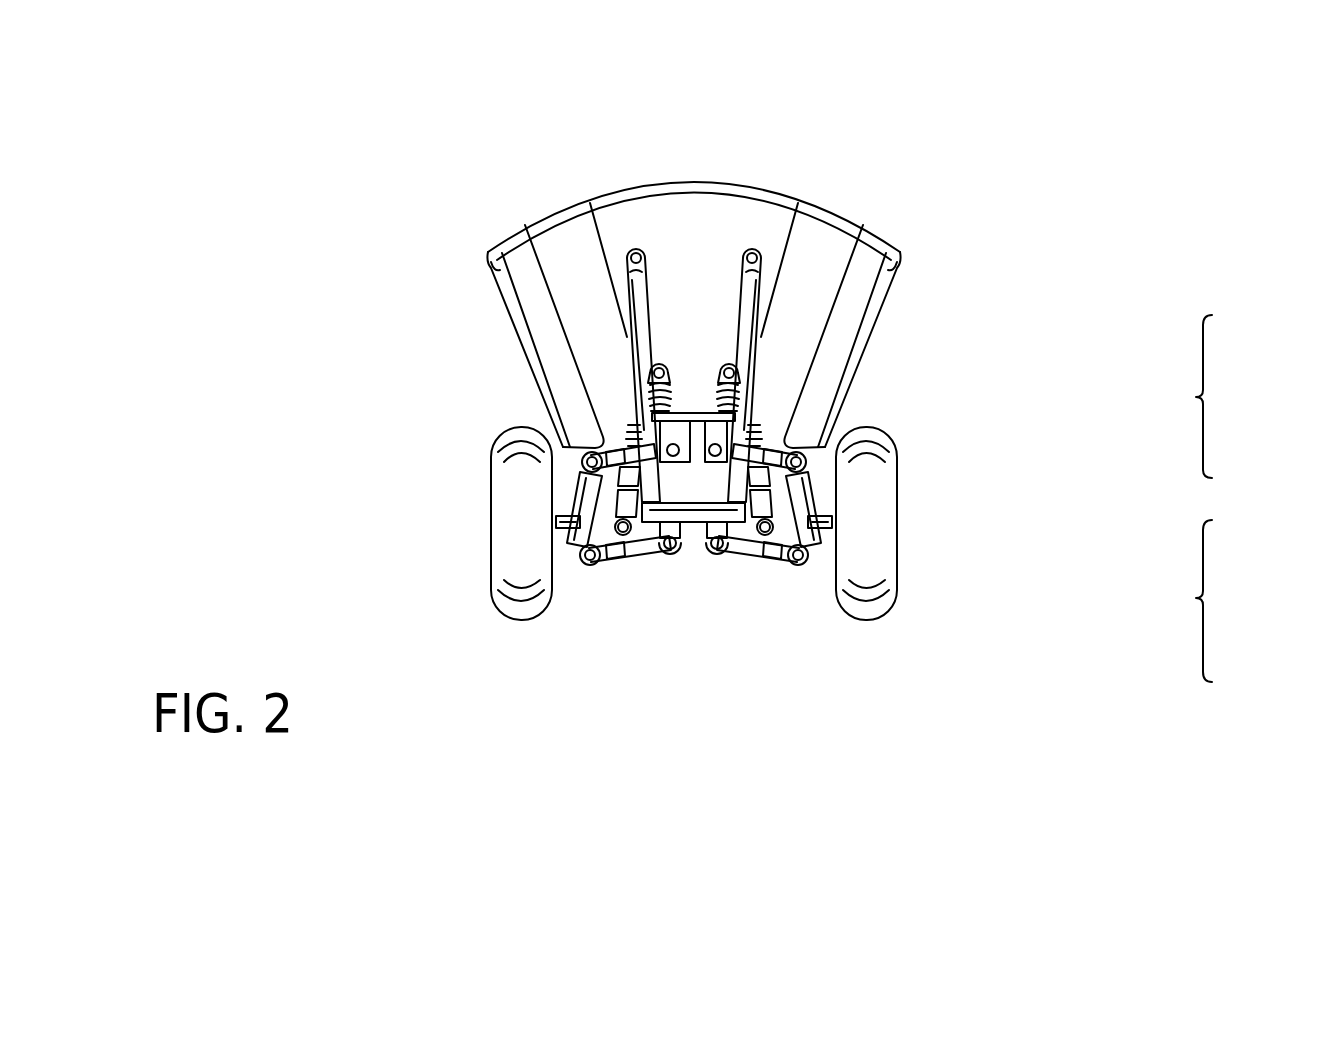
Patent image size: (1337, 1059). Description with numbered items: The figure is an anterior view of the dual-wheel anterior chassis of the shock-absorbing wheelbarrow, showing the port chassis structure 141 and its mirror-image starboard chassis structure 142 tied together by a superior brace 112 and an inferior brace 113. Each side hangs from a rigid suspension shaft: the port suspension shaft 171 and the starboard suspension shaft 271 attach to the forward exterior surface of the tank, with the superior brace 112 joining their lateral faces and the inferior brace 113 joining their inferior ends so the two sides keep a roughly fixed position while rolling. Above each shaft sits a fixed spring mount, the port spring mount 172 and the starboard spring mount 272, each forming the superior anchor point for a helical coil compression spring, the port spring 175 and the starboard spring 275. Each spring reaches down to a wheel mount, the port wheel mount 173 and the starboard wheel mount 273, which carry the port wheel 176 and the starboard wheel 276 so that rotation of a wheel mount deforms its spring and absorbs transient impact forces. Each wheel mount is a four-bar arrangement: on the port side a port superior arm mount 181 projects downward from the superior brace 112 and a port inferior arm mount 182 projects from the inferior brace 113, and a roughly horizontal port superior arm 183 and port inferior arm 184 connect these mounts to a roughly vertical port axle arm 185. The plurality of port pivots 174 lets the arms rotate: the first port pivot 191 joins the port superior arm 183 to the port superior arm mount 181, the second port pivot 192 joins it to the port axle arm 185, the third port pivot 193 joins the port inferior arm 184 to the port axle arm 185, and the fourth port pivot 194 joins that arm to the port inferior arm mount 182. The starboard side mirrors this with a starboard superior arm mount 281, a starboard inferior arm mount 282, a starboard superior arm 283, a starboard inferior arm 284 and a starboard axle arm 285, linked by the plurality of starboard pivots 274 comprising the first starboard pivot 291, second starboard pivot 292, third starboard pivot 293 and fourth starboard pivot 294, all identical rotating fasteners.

The superior brace 112 is at (692, 425).
The inferior brace 113 is at (690, 523).
The port chassis structure 141 is at (792, 330).
The starboard chassis structure 142 is at (583, 297).
The port suspension shaft 171 is at (760, 285).
The port spring mount 172 is at (770, 332).
The port wheel mount 173 is at (830, 523).
The plurality of port pivots 174 is at (1209, 396).
The port spring 175 is at (745, 407).
The port wheel 176 is at (888, 578).
The port superior arm mount 181 is at (790, 445).
The port inferior arm mount 182 is at (726, 542).
The port superior arm 183 is at (802, 455).
The port inferior arm 184 is at (740, 550).
The port axle arm 185 is at (810, 487).
The first port pivot 191 is at (675, 454).
The second port pivot 192 is at (717, 452).
The third port pivot 193 is at (798, 560).
The fourth port pivot 194 is at (716, 550).
The starboard suspension shaft 271 is at (648, 280).
The starboard spring mount 272 is at (628, 300).
The starboard wheel mount 273 is at (563, 529).
The plurality of starboard pivots 274 is at (1208, 602).
The starboard spring 275 is at (640, 437).
The starboard wheel 276 is at (518, 607).
The starboard superior arm mount 281 is at (660, 365).
The starboard inferior arm mount 282 is at (668, 537).
The starboard superior arm 283 is at (585, 459).
The starboard inferior arm 284 is at (622, 555).
The starboard axle arm 285 is at (580, 503).
The first starboard pivot 291 is at (600, 444).
The second starboard pivot 292 is at (586, 466).
The third starboard pivot 293 is at (586, 558).
The fourth starboard pivot 294 is at (683, 550).